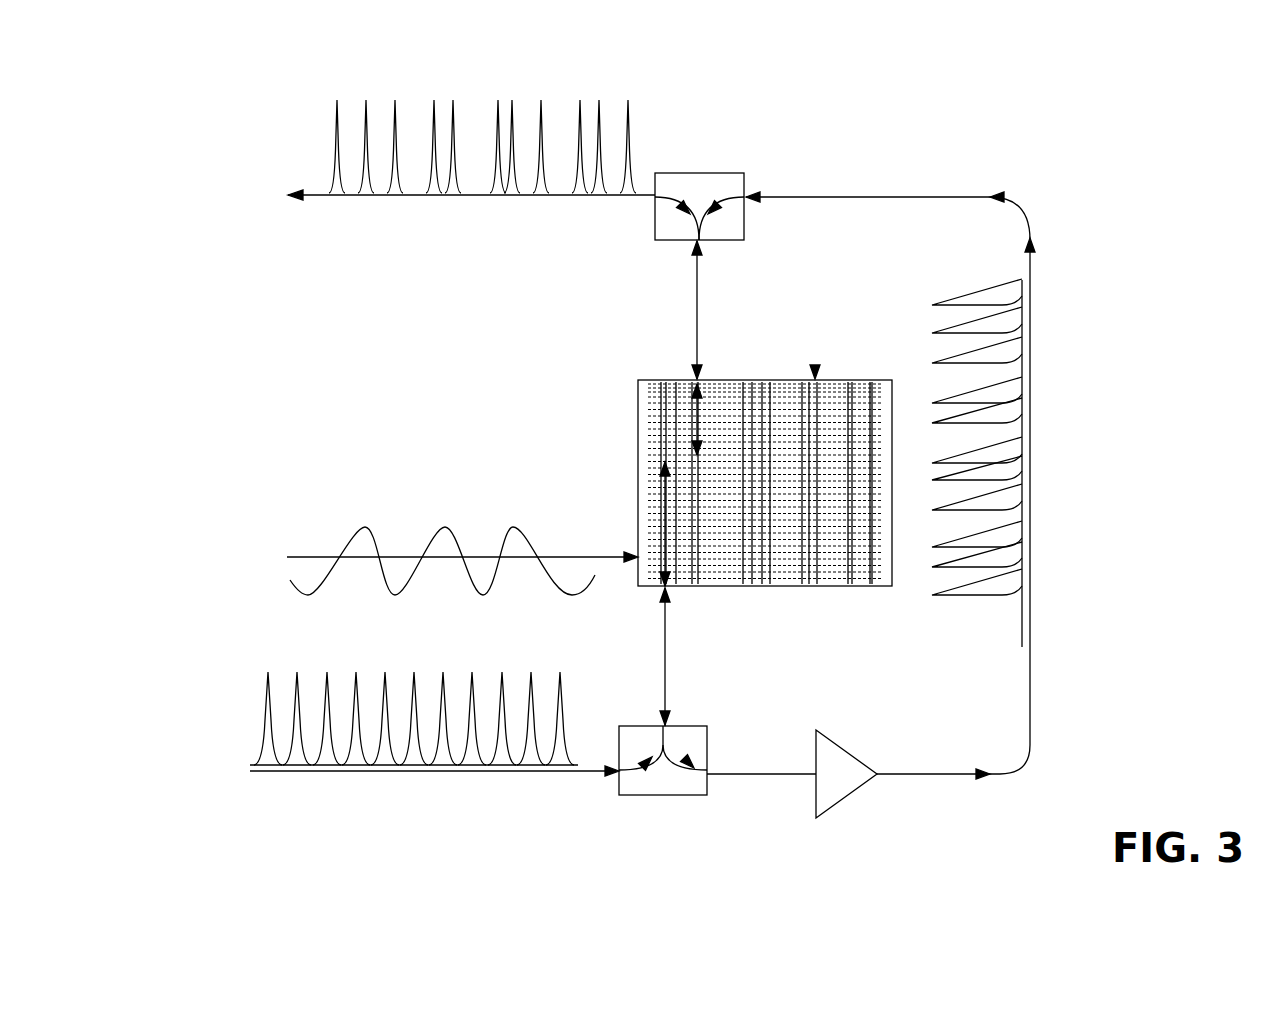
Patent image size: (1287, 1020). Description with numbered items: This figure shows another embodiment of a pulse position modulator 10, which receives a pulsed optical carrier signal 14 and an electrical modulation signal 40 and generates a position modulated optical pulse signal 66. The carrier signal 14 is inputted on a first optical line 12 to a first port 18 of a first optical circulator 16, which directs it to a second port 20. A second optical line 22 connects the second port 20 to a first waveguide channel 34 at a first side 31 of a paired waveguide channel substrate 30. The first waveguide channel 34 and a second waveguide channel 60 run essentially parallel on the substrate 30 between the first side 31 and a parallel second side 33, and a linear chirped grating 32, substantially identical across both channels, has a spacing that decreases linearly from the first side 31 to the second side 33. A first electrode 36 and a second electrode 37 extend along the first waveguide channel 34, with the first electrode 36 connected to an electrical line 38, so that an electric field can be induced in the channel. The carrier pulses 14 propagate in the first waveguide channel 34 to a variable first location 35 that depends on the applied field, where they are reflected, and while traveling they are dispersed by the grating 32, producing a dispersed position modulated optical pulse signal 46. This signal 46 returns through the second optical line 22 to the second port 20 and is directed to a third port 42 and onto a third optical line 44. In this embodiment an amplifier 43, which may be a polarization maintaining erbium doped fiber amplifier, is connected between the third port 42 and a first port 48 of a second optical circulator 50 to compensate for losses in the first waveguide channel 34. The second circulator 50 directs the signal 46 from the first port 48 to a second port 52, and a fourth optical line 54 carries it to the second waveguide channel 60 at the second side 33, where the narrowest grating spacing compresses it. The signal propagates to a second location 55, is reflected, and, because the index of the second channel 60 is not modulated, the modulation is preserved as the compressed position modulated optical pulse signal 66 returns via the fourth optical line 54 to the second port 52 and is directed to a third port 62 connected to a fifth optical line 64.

The pulse position modulator 10 is at (935, 128).
The first optical line 12 is at (400, 771).
The pulsed optical carrier signal 14 is at (265, 683).
The first optical circulator 16 is at (670, 782).
The first port 18 is at (612, 778).
The second port 20 is at (662, 727).
The second optical line 22 is at (667, 628).
The paired waveguide channel substrate 30 is at (815, 366).
The first side 31 is at (792, 590).
The linear chirped grating 32 is at (880, 406).
The second side 33 is at (724, 380).
The first waveguide channel 34 is at (663, 455).
The first location 35 is at (665, 470).
The first electrode 36 is at (670, 430).
The second electrode 37 is at (670, 392).
The electrical line 38 is at (607, 556).
The electrical modulation signal 40 is at (350, 545).
The third port 42 is at (708, 770).
The amplifier 43 is at (845, 785).
The third optical line 44 is at (1032, 440).
The dispersed position modulated optical pulse signal 46 is at (970, 296).
The first port 48 is at (748, 193).
The second optical circulator 50 is at (683, 178).
The second port 52 is at (703, 243).
The fourth optical line 54 is at (697, 350).
The second location 55 is at (697, 455).
The second waveguide channel 60 is at (694, 523).
The third port 62 is at (657, 200).
The fifth optical line 64 is at (320, 200).
The position modulated optical pulse signal 66 is at (393, 128).